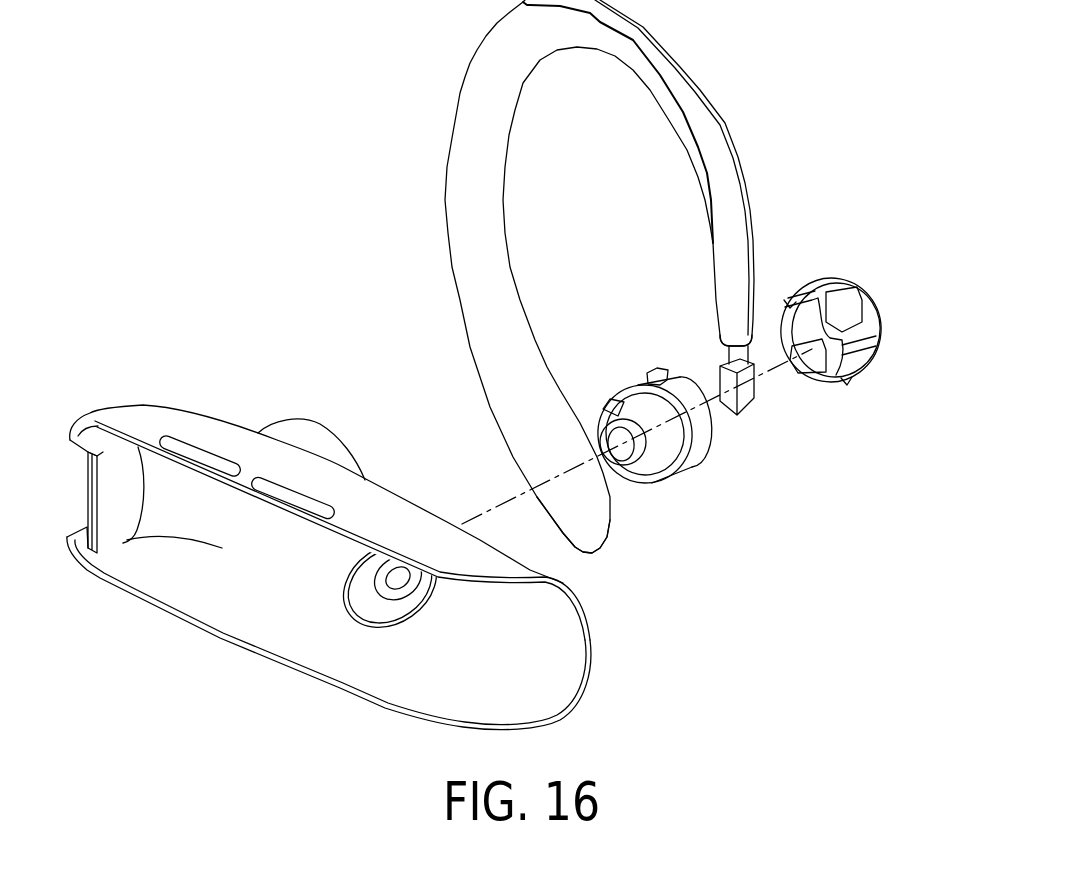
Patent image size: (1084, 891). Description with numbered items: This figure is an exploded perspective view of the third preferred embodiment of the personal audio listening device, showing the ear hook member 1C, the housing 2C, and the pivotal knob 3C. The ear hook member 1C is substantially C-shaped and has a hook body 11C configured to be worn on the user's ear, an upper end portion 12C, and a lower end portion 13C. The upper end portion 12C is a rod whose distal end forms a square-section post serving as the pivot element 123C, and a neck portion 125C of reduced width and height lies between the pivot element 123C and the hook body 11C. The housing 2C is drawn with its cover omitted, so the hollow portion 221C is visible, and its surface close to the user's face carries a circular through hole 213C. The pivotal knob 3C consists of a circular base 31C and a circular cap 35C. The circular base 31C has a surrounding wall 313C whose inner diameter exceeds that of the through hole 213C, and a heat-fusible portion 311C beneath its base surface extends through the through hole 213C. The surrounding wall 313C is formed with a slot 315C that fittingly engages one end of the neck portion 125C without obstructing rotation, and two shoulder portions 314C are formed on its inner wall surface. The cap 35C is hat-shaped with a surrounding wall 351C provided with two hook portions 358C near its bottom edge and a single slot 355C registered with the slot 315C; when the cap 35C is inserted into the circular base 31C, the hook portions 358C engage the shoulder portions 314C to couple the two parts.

The ear hook member 1C is at (450, 98).
The hook body 11C is at (468, 173).
The lower end portion 13C is at (602, 553).
The neck portion 125C is at (733, 354).
The upper end portion 12C is at (741, 420).
The pivot element 123C is at (753, 390).
The pivotal knob 3C is at (659, 419).
The circular base 31C is at (659, 449).
The surrounding wall 313C is at (688, 458).
The heat-fusible portion 311C is at (628, 468).
The shoulder portions 314C is at (612, 404).
The slot 315C is at (657, 383).
The circular cap 35C is at (858, 356).
The surrounding wall 351C is at (858, 352).
The slot 355C is at (823, 292).
The hook portions 358C is at (790, 306).
The housing 2C is at (329, 585).
The hollow portion 221C is at (384, 670).
The circular through hole 213C is at (398, 578).